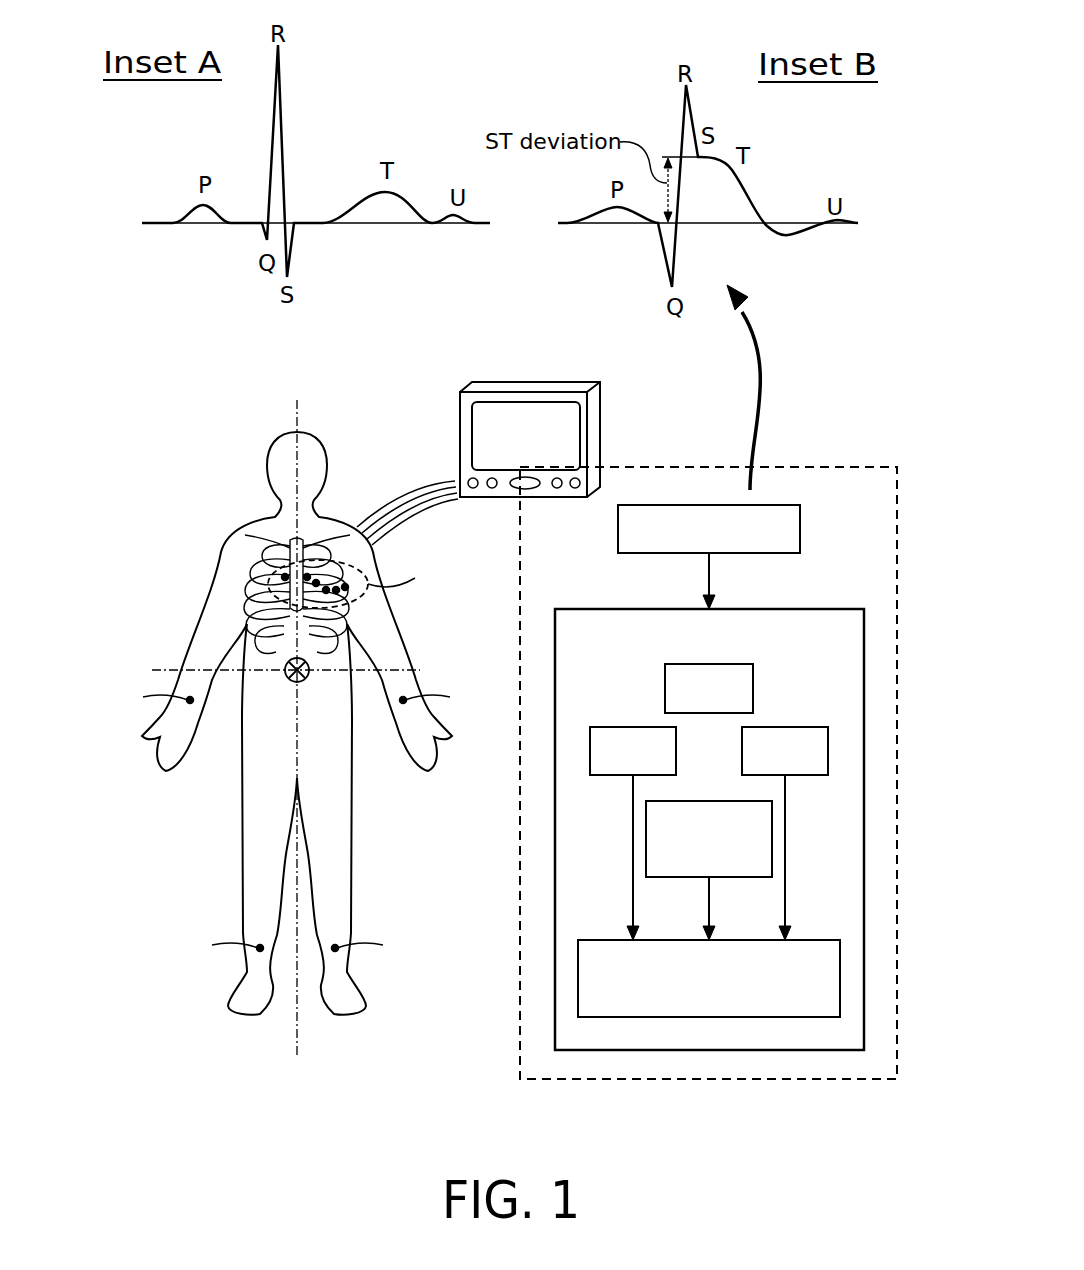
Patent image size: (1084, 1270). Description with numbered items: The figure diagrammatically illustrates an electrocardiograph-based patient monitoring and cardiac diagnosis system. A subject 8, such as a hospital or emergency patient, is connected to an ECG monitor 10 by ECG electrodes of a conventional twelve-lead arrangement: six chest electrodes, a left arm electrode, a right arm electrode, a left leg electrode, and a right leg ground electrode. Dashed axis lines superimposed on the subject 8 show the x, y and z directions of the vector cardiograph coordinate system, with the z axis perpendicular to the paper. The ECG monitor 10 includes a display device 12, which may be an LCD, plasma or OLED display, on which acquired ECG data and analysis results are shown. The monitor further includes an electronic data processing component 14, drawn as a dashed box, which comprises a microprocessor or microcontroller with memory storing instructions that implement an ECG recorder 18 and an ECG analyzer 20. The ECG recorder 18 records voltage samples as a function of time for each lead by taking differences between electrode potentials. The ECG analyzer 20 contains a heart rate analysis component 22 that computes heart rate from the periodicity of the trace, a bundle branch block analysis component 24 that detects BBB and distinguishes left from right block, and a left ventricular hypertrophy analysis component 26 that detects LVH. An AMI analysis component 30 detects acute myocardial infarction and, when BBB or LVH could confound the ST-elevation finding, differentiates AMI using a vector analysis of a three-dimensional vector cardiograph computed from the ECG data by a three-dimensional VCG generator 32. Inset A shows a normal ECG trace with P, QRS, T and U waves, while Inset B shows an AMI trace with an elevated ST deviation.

The subject 8 is at (225, 553).
The electrocardiograph (ECG) monitor 10 is at (595, 415).
The display device 12 is at (512, 452).
The electronic data processing component 14 is at (835, 467).
The ECG recorder 18 is at (800, 530).
The ECG analyzer 20 is at (575, 609).
The heart rate (HR) analysis component 22 is at (753, 690).
The bundle branch block (BBB) analysis component 24 is at (597, 775).
The left ventricular hypertrophy (LVH) analysis component 26 is at (820, 775).
The AMI analysis component 30 is at (820, 940).
The 3D-VCG generator 32 is at (708, 801).